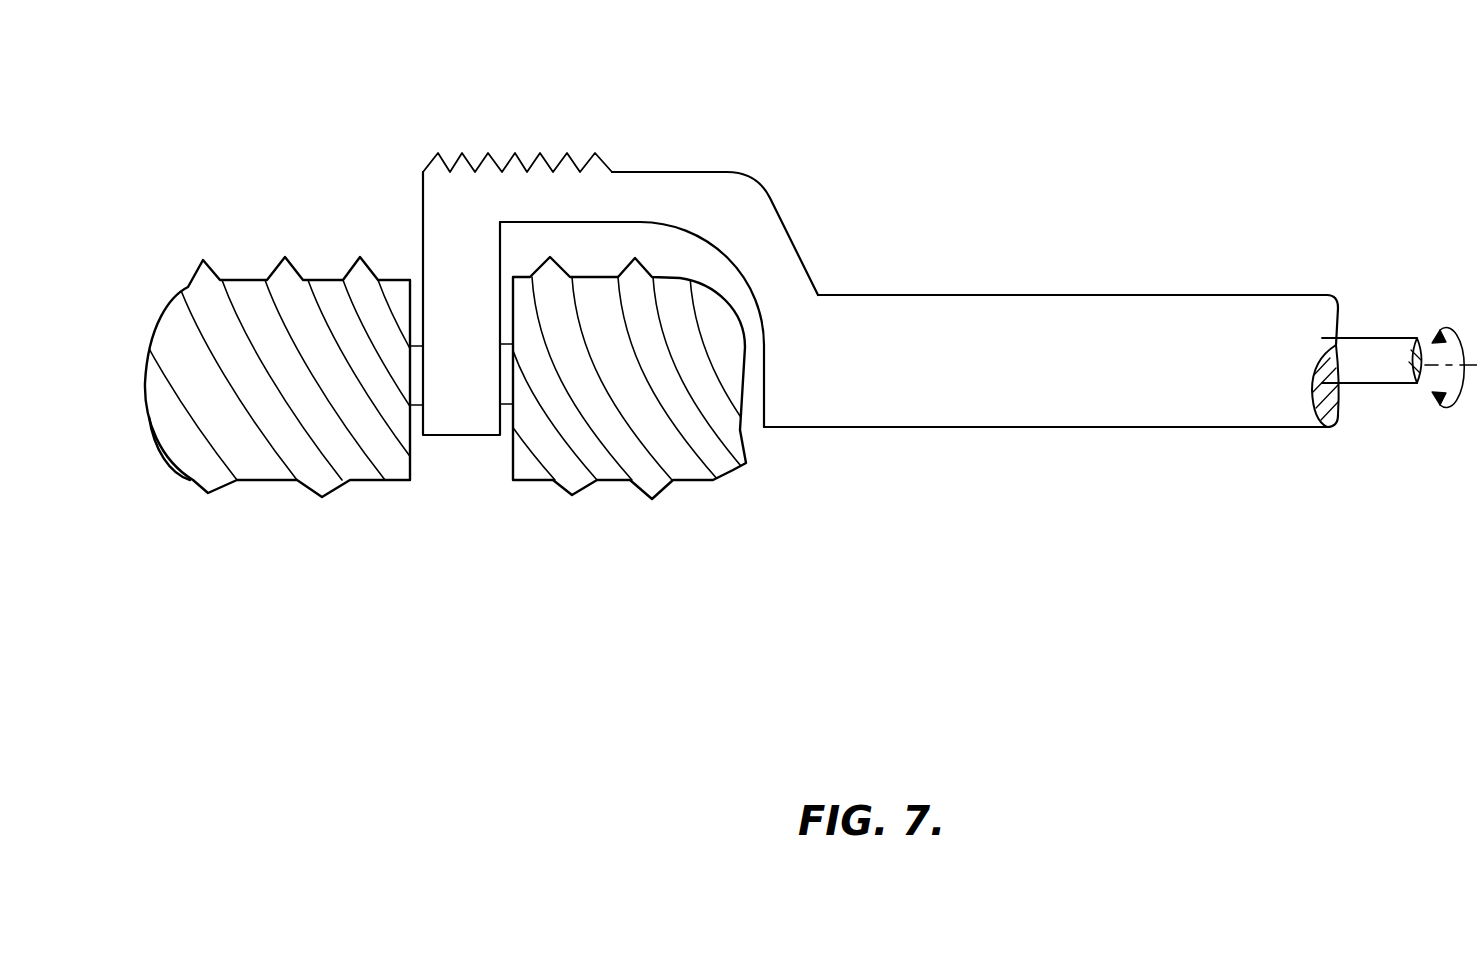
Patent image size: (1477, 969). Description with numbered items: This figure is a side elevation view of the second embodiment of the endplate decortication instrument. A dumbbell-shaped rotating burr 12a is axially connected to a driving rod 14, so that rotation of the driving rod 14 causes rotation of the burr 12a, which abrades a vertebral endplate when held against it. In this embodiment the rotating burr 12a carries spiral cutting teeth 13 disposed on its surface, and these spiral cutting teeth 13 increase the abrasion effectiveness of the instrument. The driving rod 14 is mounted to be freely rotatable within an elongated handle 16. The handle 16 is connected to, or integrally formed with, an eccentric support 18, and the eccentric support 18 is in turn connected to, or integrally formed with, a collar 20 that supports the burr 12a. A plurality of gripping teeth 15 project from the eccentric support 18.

The rotating burr 12a is at (242, 506).
The spiral cutting teeth 13 is at (278, 297).
The driving rod 14 is at (1388, 373).
The gripping teeth 15 is at (597, 125).
The elongated handle 16 is at (885, 407).
The eccentric support 18 is at (472, 199).
The collar 20 is at (457, 390).